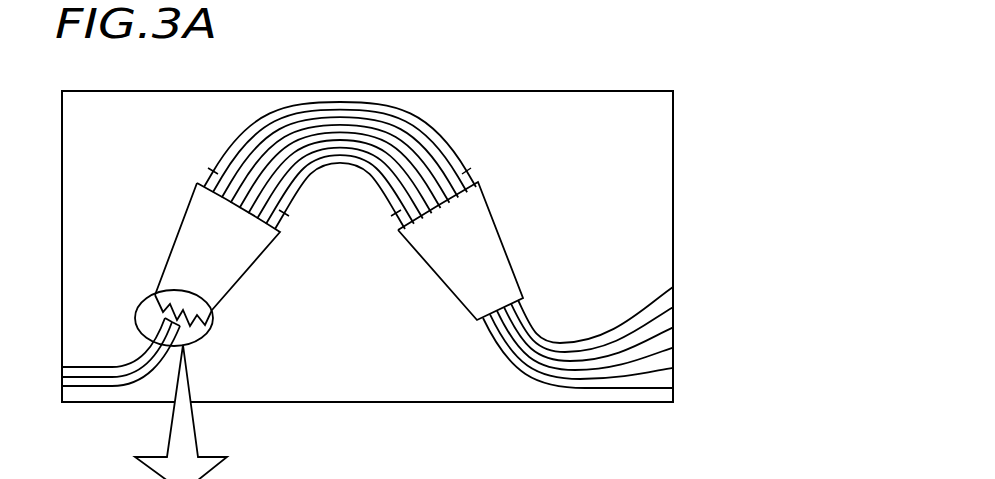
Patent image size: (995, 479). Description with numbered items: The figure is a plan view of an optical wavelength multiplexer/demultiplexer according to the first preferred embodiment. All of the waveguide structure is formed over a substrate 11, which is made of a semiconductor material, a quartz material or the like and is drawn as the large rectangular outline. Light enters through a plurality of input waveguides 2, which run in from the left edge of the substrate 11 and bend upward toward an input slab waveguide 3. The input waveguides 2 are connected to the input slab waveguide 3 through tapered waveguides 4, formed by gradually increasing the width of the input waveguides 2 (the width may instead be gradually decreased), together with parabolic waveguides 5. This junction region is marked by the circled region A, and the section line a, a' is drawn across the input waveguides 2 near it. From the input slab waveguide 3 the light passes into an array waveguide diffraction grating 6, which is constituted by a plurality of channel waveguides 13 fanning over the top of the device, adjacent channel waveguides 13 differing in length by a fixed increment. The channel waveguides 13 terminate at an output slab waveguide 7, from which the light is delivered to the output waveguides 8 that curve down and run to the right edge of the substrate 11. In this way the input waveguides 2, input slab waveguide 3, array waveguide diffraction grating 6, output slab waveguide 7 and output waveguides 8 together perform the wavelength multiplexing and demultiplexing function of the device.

The input waveguides 2 is at (88, 397).
The input slab waveguide 3 is at (233, 235).
The tapered waveguides 4 is at (188, 347).
The parabolic waveguides 5 is at (203, 327).
The array waveguide diffraction grating 6 is at (427, 116).
The output slab waveguide 7 is at (482, 232).
The output waveguides 8 is at (647, 275).
The substrate 11 is at (673, 193).
The channel waveguides 13 is at (430, 133).
The enlarged region A is at (152, 293).
The section line a is at (129, 347).
The section line a' is at (162, 383).